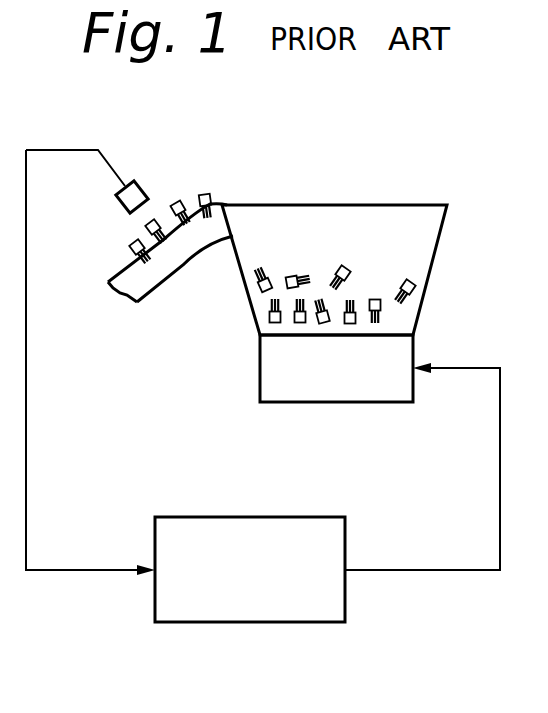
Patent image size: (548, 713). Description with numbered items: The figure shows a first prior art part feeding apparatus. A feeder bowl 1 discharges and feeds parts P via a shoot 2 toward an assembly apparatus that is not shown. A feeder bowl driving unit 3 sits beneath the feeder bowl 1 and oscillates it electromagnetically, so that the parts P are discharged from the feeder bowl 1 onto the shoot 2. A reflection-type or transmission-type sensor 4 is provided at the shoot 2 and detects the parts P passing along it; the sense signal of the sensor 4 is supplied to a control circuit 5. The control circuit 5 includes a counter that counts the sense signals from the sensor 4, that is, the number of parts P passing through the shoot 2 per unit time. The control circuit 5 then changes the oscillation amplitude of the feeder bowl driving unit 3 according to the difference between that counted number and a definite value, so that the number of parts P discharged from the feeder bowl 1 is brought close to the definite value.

The feeder bowl 1 is at (405, 204).
The shoot 2 is at (144, 282).
The feeder bowl driving unit 3 is at (417, 348).
The sensor 4 is at (143, 183).
The control circuit 5 is at (310, 516).
The parts P is at (348, 268).